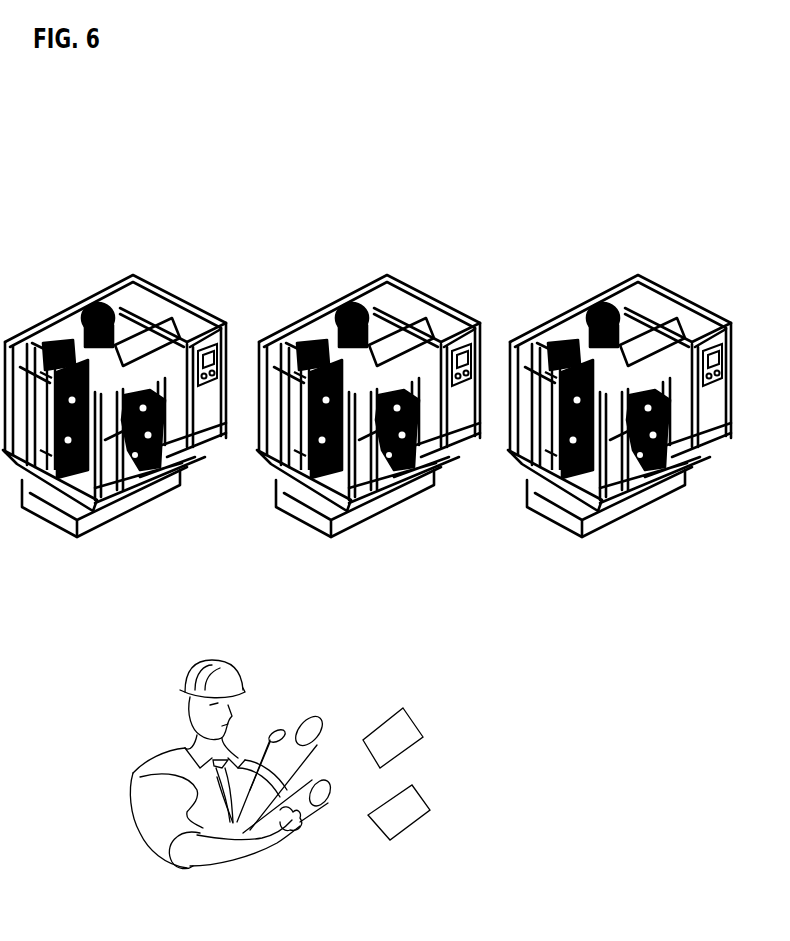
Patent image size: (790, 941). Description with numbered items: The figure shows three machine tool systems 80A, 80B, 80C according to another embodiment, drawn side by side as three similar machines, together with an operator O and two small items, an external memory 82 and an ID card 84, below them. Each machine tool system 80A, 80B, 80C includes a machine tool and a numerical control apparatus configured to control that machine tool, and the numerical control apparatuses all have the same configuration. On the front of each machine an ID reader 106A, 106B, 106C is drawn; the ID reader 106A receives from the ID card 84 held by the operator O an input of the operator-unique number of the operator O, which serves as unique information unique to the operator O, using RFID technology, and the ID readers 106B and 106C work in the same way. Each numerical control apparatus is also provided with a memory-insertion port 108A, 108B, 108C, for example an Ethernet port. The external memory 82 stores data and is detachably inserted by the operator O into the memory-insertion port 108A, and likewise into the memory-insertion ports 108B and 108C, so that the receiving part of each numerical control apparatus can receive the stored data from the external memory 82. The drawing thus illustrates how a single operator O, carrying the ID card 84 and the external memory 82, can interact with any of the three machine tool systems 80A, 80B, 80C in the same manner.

The machine tool system 80A is at (114, 353).
The machine tool system 80B is at (369, 353).
The machine tool system 80C is at (620, 353).
The ID reader 106A is at (199, 350).
The ID reader 106B is at (461, 326).
The ID reader 106C is at (712, 326).
The memory-insertion port 108A is at (43, 403).
The memory-insertion port 108B is at (289, 368).
The memory-insertion port 108C is at (539, 368).
The operator O is at (188, 667).
The external memory 82 is at (417, 718).
The ID card 84 is at (422, 795).